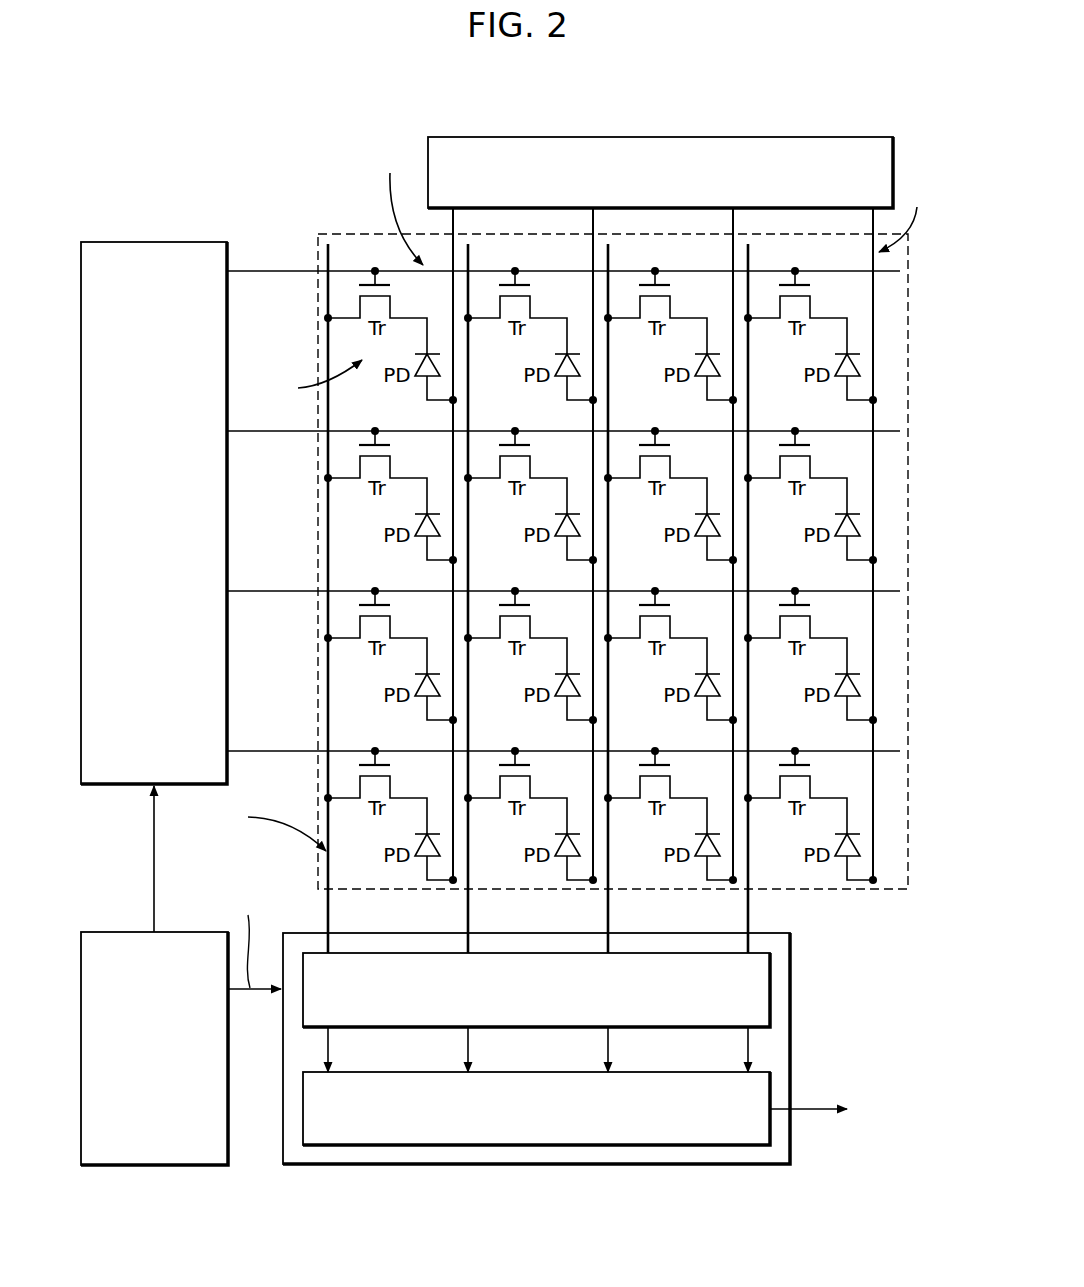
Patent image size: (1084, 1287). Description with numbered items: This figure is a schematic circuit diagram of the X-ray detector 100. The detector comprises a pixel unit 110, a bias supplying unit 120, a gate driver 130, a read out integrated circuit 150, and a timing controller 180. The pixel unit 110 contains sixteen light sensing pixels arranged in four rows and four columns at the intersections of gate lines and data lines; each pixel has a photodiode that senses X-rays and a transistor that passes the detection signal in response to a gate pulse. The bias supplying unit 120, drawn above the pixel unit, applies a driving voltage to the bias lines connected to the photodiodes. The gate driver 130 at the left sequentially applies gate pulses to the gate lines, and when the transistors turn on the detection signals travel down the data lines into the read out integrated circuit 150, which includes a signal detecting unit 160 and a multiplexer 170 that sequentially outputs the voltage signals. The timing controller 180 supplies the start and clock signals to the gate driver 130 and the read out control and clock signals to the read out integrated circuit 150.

The X-ray detector 100 is at (850, 105).
The pixel unit 110 is at (348, 229).
The bias supplying unit 120 is at (668, 136).
The gate driver 130 is at (163, 241).
The read out integrated circuit 150 is at (791, 950).
The signal detecting unit 160 is at (771, 992).
The multiplexer 170 is at (771, 1093).
The timing controller 180 is at (153, 1165).